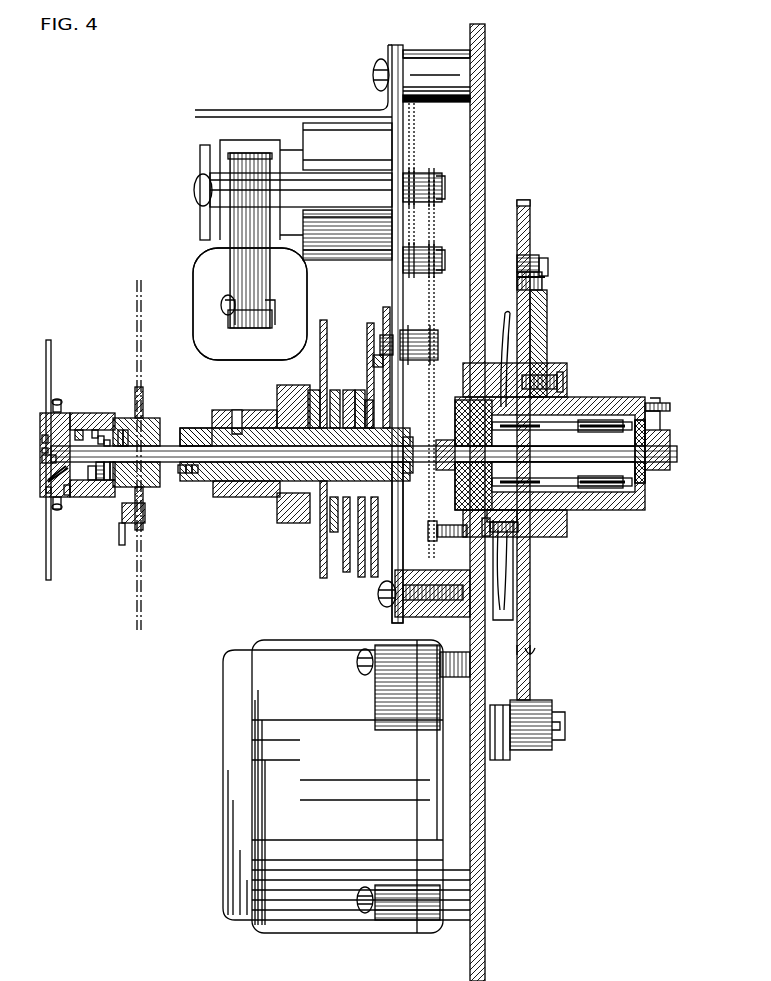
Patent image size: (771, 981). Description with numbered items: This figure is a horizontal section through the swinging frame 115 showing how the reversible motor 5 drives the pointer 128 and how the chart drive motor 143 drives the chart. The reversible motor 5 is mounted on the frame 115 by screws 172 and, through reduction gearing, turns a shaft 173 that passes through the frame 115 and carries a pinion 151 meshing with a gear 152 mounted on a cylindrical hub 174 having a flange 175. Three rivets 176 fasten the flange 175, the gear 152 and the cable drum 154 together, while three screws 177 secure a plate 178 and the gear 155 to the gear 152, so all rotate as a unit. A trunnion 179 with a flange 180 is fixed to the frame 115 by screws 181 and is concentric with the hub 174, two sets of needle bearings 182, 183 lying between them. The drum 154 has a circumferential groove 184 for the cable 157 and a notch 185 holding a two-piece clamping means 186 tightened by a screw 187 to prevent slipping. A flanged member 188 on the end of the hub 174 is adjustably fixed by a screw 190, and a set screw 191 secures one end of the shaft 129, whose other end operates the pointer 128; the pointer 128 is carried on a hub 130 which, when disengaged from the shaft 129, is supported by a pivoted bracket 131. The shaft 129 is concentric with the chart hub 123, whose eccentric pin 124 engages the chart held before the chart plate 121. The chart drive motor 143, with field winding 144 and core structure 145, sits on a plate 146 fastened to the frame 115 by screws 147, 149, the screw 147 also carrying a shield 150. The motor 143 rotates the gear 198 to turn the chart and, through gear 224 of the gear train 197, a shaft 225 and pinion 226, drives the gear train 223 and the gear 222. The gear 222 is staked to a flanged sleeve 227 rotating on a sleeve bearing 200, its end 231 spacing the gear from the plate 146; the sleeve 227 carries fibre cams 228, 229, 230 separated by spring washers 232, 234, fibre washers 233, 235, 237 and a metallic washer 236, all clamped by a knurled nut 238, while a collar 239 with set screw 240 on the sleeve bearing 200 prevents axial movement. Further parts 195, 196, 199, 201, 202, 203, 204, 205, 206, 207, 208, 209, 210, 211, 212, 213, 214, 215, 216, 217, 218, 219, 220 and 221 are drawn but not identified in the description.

The reversible motor 5 is at (223, 772).
The frame 115 is at (485, 131).
The chart plate 121 is at (142, 615).
The chart hub 123 is at (142, 416).
The eccentrically located pin 124 is at (123, 545).
The pointer 128 is at (47, 356).
The shaft 129 is at (188, 450).
The hub 130 is at (46, 490).
The bracket 131 is at (59, 398).
The chart drive motor 143 is at (170, 272).
The field winding 144 is at (196, 337).
The core structure 145 is at (248, 153).
The plate 146 is at (392, 268).
The screw 147 is at (374, 68).
The screw 149 is at (378, 603).
The shield 150 is at (260, 110).
The pinion 151 is at (540, 712).
The gear 152 is at (530, 212).
The cable drum 154 is at (547, 316).
The gear 155 is at (498, 590).
The cable 157 is at (540, 660).
The screws 172 is at (358, 672).
The shaft 173 is at (502, 752).
The cylindrical hub 174 is at (603, 500).
The flange 175 is at (560, 363).
The rivets 176 is at (560, 382).
The screws 177 is at (499, 614).
The plate 178 is at (505, 313).
The trunnion 179 is at (430, 440).
The flange 180 is at (460, 540).
The screws 181 is at (445, 535).
The needle bearings 182 is at (540, 422).
The needle bearings 183 is at (604, 420).
The circumferential groove 184 is at (535, 656).
The notch 185 is at (542, 286).
The two-piece clamping means 186 is at (542, 260).
The screw 187 is at (548, 267).
The flanged member 188 is at (642, 483).
The screw 190 is at (657, 403).
The set screw 191 is at (668, 430).
The drive shaft 195 is at (345, 255).
The sprocket 196 is at (428, 182).
The gear train 197 is at (448, 256).
The gear 198 is at (440, 388).
The hub 199 is at (455, 415).
The sleeve bearing 200 is at (264, 500).
The ring 201 is at (182, 473).
The sleeve 202 is at (200, 433).
The collar 203 is at (146, 516).
The plate 204 is at (125, 430).
The ring 205 is at (190, 480).
The ring 206 is at (185, 474).
The plate 207 is at (120, 430).
The pin 208 is at (106, 440).
The washer 209 is at (106, 483).
The washer 210 is at (113, 484).
The pin 211 is at (100, 436).
The spring 212 is at (55, 470).
The ring 213 is at (48, 461).
The pin 214 is at (79, 430).
The ring 215 is at (45, 451).
The pin 216 is at (95, 430).
The ring 217 is at (92, 481).
The pin 218 is at (68, 497).
The hub 219 is at (45, 439).
The spring 220 is at (99, 481).
The screw 221 is at (50, 507).
The gear 222 is at (361, 535).
The gear train 223 is at (378, 360).
The gear 224 is at (435, 295).
The shaft 225 is at (443, 353).
The pinion 226 is at (385, 300).
The flanged sleeve 227 is at (347, 525).
The fibre cam 228 is at (330, 306).
The fibre cam 229 is at (322, 572).
The fibre cam 230 is at (371, 323).
The end of flanged sleeve 231 is at (405, 481).
The metallic spring washers 232 is at (366, 395).
The fibre washer 233 is at (374, 552).
The metallic spring washers 234 is at (337, 390).
The fibre washer 235 is at (334, 532).
The metallic washer 236 is at (314, 390).
The fibre washer 237 is at (308, 523).
The knurled nut 238 is at (300, 386).
The collar 239 is at (226, 410).
The set screw 240 is at (254, 410).